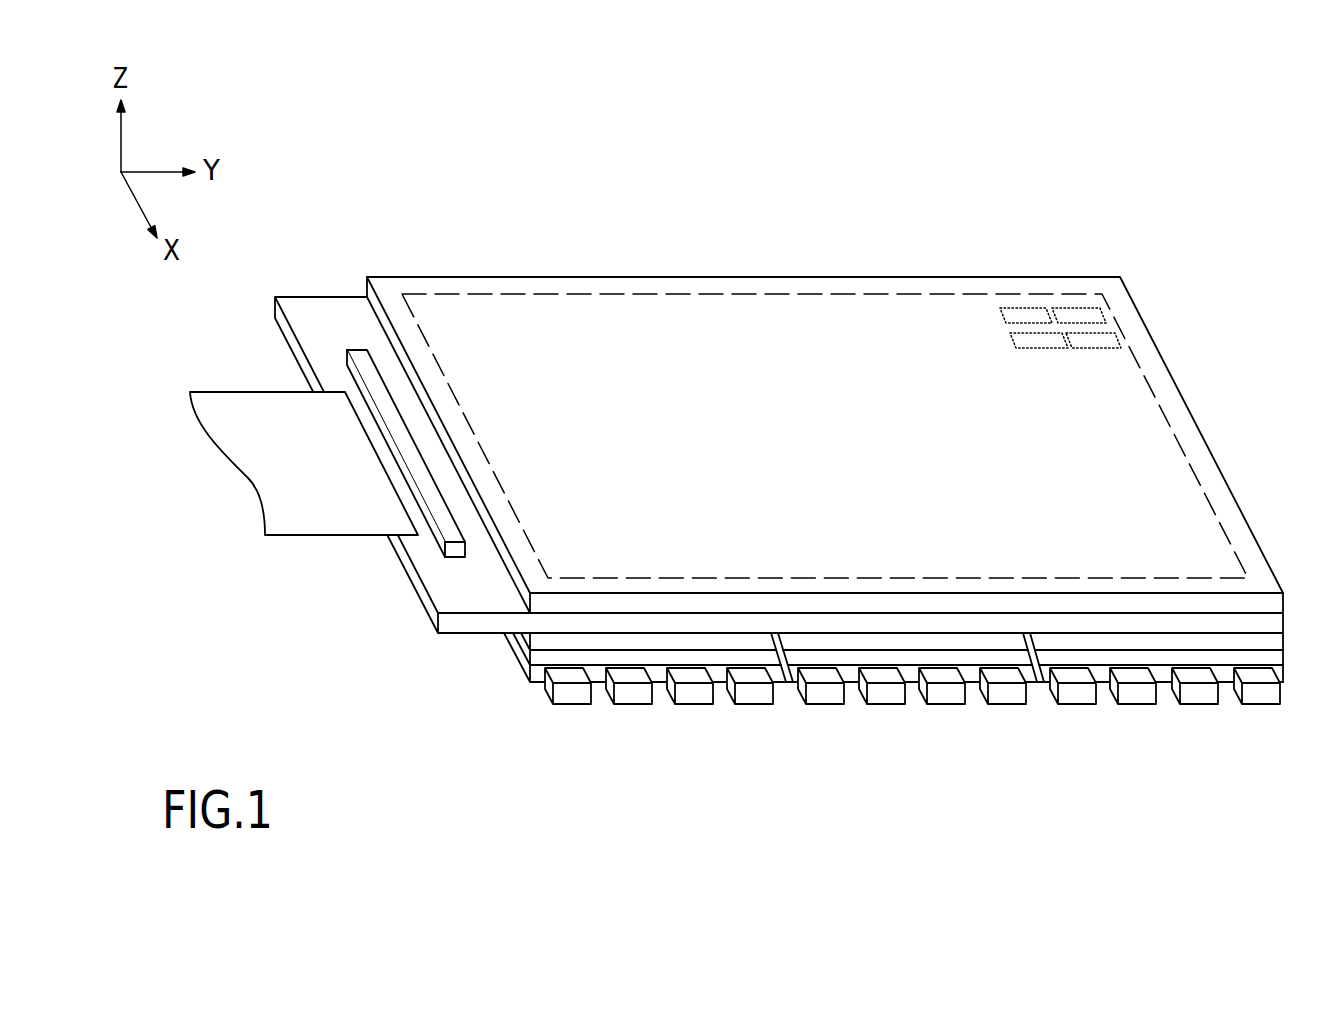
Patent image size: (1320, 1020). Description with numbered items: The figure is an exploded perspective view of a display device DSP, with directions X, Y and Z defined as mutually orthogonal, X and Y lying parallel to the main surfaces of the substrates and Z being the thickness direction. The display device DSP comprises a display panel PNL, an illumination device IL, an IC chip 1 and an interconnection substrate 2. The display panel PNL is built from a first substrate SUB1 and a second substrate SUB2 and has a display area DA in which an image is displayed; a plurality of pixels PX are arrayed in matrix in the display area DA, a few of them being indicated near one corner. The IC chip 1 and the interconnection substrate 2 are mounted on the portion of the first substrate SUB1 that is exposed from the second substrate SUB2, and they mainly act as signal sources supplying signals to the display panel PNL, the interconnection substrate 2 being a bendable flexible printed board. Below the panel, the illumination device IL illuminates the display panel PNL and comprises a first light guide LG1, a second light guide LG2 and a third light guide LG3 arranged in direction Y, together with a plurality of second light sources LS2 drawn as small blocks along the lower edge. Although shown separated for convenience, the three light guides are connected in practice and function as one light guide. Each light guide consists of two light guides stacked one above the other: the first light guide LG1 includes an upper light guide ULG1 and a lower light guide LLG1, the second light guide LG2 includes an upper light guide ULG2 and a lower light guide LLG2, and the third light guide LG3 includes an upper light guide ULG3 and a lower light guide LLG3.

The display device DSP is at (1004, 141).
The display panel PNL is at (868, 287).
The first substrate SUB1 is at (457, 622).
The second substrate SUB2 is at (1117, 297).
The display area DA is at (703, 295).
The pixel PX is at (1022, 303).
The IC chip 1 is at (360, 357).
The interconnection substrate 2 is at (258, 466).
The illumination device IL is at (460, 733).
The first light guide LG1 is at (655, 756).
The second light guide LG2 is at (891, 756).
The third light guide LG3 is at (1159, 756).
The upper light guide ULG1 is at (600, 656).
The lower light guide LLG1 is at (660, 672).
The upper light guide ULG2 is at (795, 656).
The lower light guide LLG2 is at (849, 672).
The upper light guide ULG3 is at (1110, 654).
The lower light guide LLG3 is at (1164, 672).
The second light source LS2 is at (556, 706).